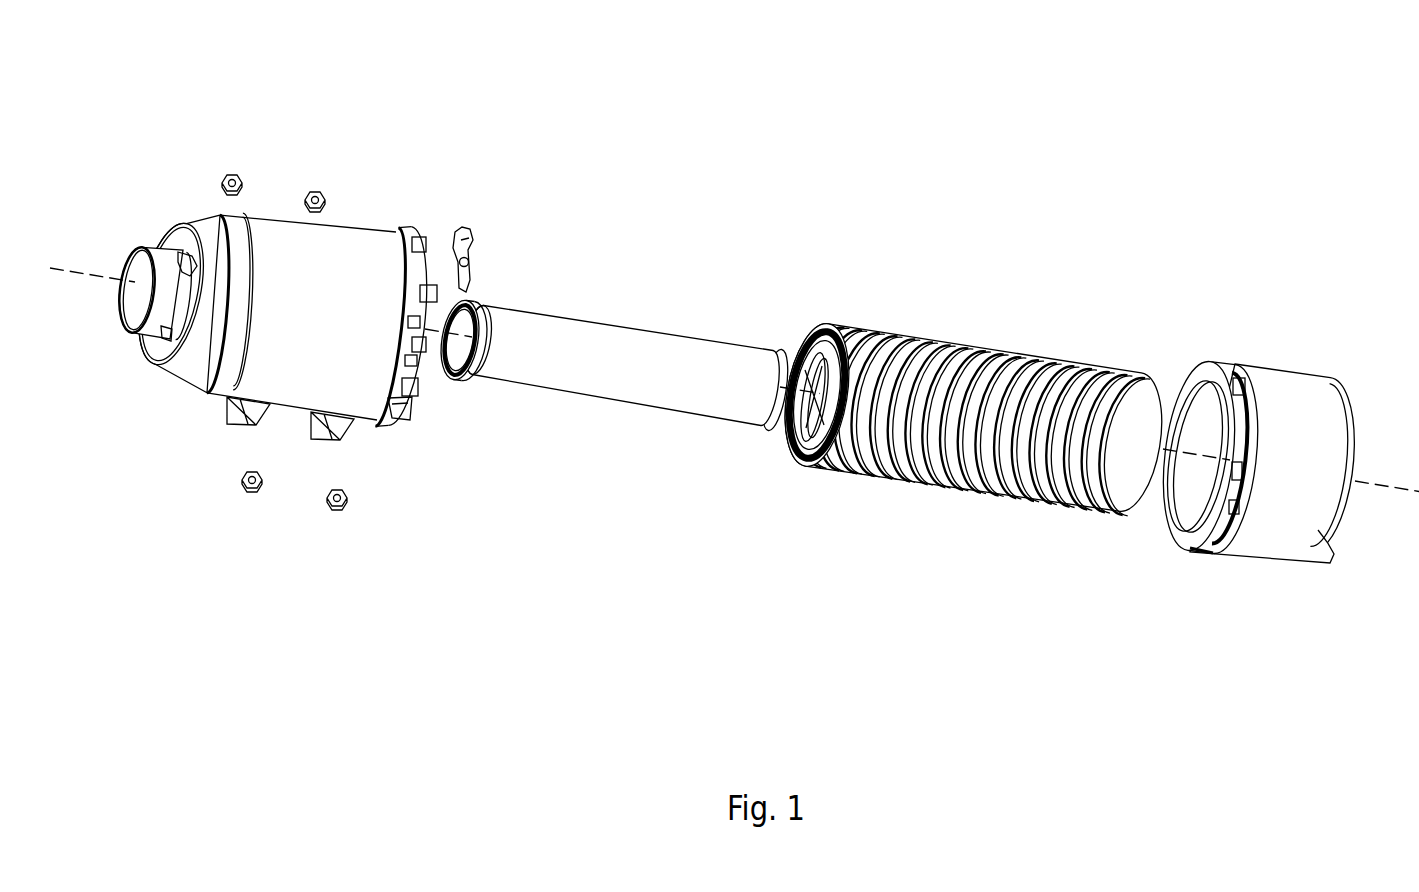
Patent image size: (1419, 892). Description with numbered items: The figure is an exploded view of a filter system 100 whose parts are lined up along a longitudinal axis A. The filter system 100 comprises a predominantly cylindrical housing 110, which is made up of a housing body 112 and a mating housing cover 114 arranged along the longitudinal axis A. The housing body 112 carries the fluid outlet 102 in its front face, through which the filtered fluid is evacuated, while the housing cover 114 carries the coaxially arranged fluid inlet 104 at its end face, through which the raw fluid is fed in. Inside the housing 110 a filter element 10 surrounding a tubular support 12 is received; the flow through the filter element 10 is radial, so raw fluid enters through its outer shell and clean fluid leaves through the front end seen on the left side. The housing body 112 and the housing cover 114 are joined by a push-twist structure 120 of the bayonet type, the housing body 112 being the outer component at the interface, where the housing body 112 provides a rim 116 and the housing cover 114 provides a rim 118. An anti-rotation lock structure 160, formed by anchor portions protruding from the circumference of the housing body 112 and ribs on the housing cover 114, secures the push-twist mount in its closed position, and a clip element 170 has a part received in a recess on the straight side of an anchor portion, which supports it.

The filter system 100 is at (979, 153).
The fluid outlet 102 is at (139, 262).
The fluid inlet 104 is at (1335, 413).
The filter element 10 is at (983, 350).
The tubular support 12 is at (592, 330).
The housing 110 is at (817, 373).
The housing body 112 is at (816, 305).
The housing cover 114 is at (1226, 448).
The rim 116 is at (399, 426).
The rim 118 is at (1172, 553).
The push-twist structure 120 is at (391, 341).
The anti-rotation lock structure 160 is at (400, 294).
The clip element 170 is at (483, 257).
The longitudinal axis A is at (1382, 483).